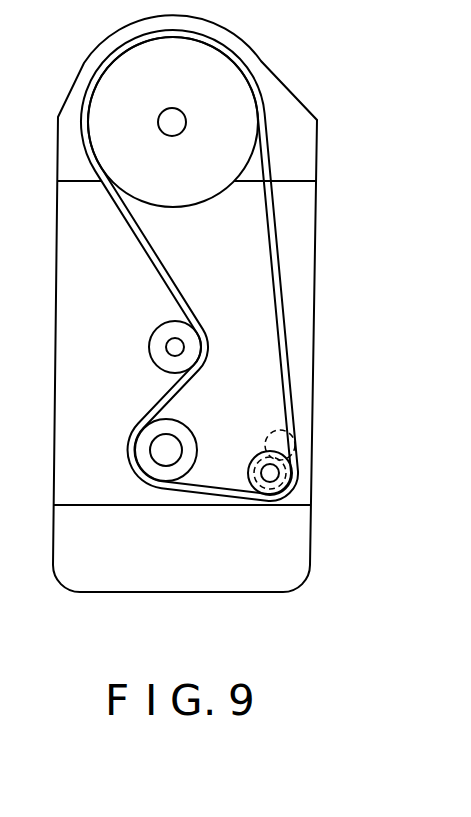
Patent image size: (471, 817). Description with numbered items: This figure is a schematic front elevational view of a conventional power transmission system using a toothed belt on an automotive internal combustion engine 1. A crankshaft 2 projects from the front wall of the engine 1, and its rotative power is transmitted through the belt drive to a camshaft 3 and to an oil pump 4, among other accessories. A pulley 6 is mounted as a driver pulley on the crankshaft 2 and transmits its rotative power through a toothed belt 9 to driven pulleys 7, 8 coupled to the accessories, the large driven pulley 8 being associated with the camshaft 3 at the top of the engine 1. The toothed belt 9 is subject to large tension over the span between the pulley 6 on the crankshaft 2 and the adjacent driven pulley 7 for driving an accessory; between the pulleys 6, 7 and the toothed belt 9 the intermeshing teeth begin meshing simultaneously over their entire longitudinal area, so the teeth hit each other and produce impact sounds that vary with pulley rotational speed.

The automotive internal combustion engine 1 is at (344, 197).
The crankshaft 2 is at (173, 447).
The camshaft 3 is at (175, 114).
The oil pump 4 is at (289, 450).
The pulley 6 is at (188, 465).
The driven pulley 7 is at (292, 477).
The driven pulley 8 is at (235, 88).
The toothed belt 9 is at (276, 291).